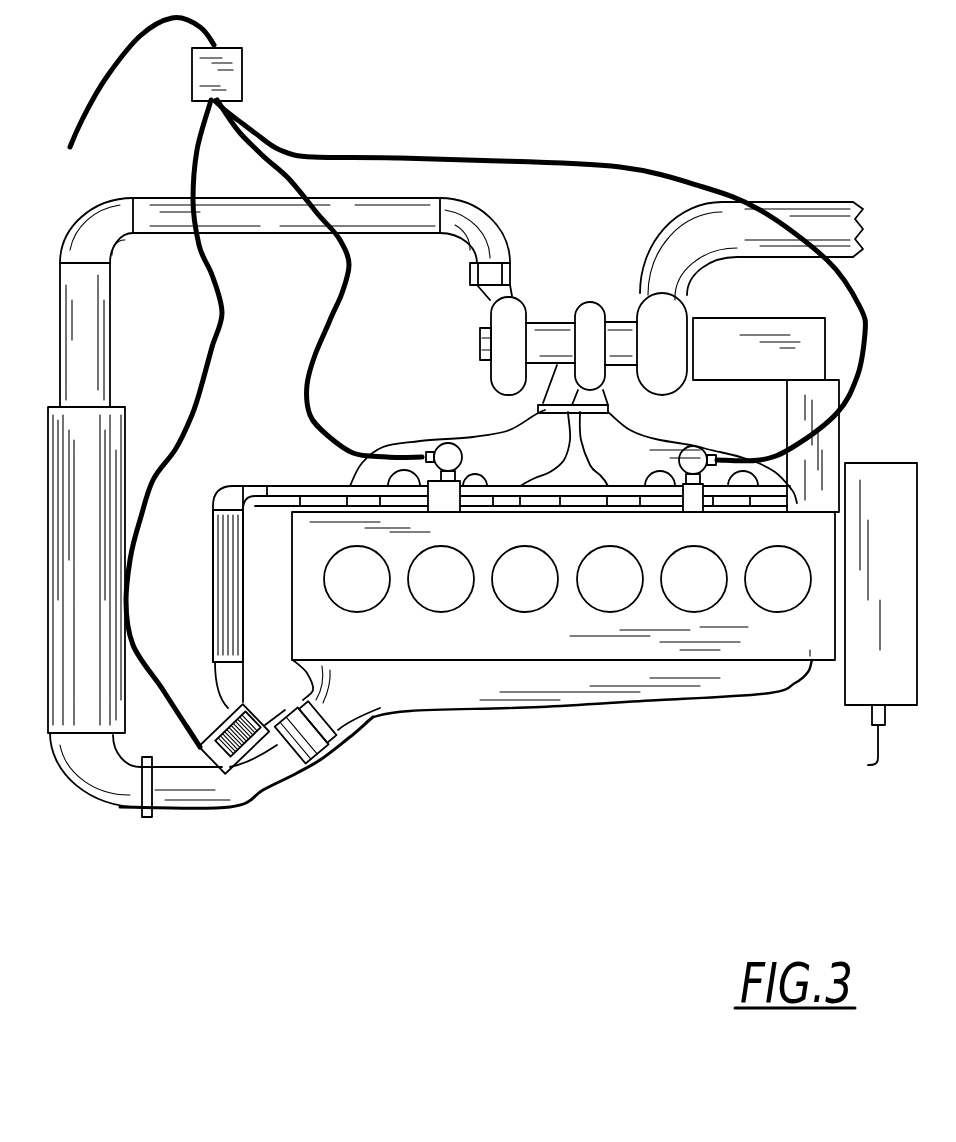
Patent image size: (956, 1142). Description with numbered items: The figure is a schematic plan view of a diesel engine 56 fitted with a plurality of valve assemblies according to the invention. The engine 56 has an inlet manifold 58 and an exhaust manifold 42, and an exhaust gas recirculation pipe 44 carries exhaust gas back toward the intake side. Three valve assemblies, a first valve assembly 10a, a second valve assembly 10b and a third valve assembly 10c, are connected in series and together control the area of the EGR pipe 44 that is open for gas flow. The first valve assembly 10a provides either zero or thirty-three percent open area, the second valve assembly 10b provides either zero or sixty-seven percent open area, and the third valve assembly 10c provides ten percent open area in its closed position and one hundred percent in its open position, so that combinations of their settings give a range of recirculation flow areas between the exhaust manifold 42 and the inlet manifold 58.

The first valve assembly 10a is at (693, 450).
The second valve assembly 10b is at (447, 450).
The third valve assembly 10c is at (233, 770).
The exhaust manifold 42 is at (527, 467).
The exhaust gas recirculation (EGR) pipe 44 is at (238, 493).
The diesel engine 56 is at (620, 773).
The inlet manifold 58 is at (472, 695).